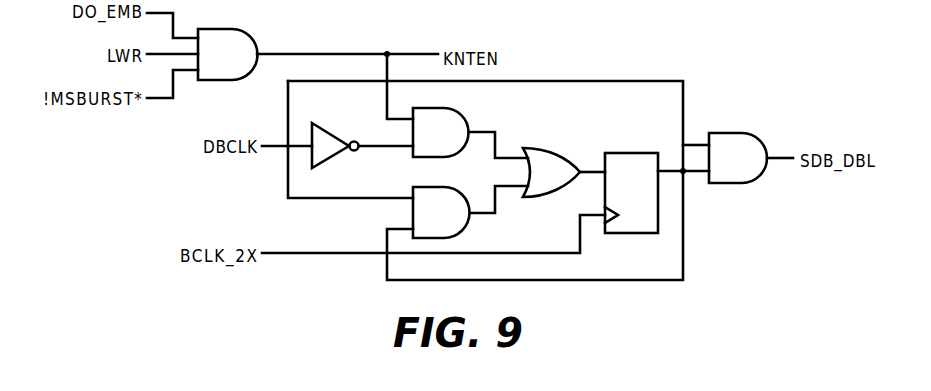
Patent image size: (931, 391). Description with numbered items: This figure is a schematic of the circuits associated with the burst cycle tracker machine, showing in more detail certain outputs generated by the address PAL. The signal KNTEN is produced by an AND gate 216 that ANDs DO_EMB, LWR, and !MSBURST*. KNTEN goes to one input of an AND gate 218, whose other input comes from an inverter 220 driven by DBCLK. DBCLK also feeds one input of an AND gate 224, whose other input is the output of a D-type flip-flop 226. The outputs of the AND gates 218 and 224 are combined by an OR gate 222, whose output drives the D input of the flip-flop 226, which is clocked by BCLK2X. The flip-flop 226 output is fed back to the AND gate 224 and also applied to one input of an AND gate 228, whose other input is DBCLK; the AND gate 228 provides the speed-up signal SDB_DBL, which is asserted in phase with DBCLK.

The AND gate 216 is at (257, 42).
The AND gate 218 is at (464, 112).
The inverter 220 is at (335, 134).
The OR gate 222 is at (551, 147).
The AND gate 224 is at (466, 228).
The D-type flip-flop 226 is at (648, 152).
The AND gate 228 is at (757, 178).